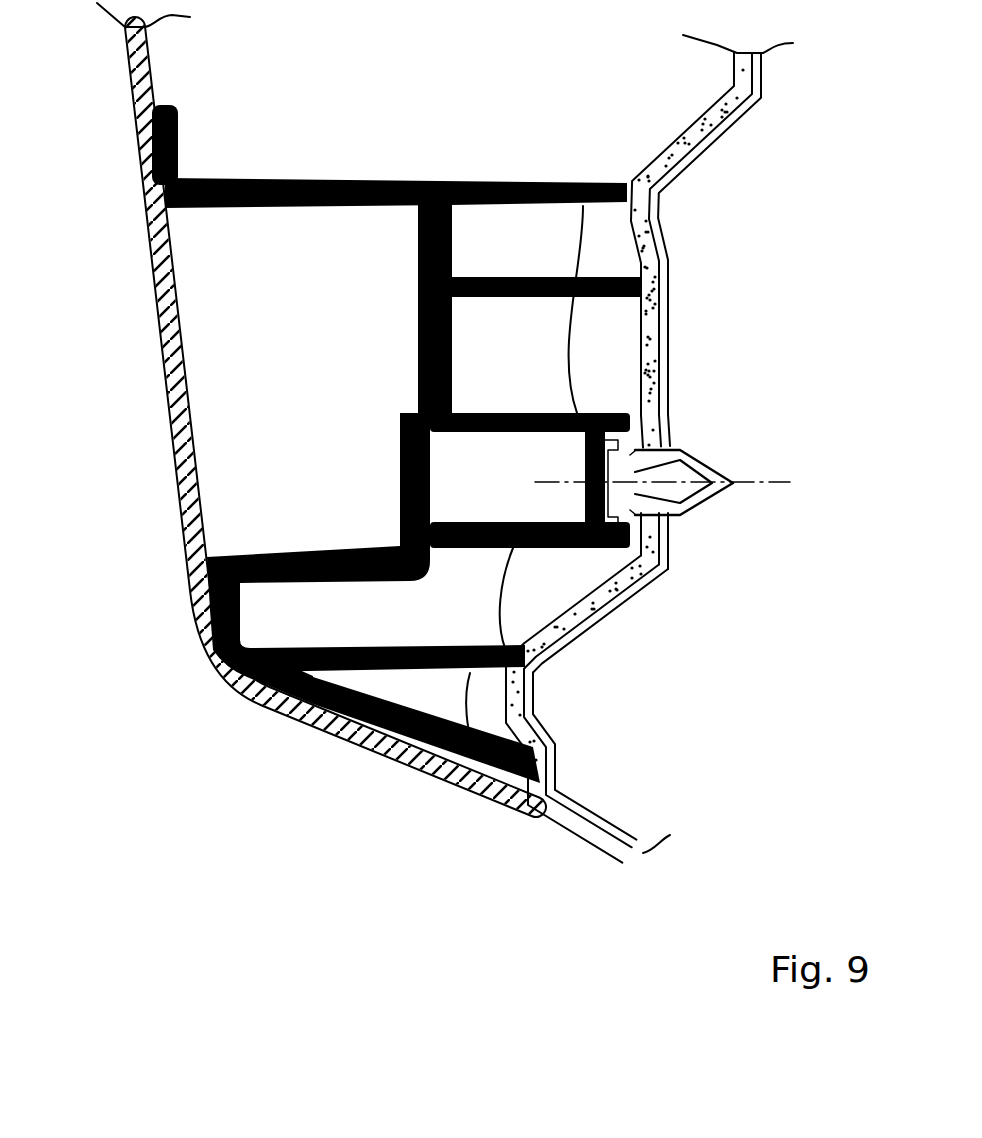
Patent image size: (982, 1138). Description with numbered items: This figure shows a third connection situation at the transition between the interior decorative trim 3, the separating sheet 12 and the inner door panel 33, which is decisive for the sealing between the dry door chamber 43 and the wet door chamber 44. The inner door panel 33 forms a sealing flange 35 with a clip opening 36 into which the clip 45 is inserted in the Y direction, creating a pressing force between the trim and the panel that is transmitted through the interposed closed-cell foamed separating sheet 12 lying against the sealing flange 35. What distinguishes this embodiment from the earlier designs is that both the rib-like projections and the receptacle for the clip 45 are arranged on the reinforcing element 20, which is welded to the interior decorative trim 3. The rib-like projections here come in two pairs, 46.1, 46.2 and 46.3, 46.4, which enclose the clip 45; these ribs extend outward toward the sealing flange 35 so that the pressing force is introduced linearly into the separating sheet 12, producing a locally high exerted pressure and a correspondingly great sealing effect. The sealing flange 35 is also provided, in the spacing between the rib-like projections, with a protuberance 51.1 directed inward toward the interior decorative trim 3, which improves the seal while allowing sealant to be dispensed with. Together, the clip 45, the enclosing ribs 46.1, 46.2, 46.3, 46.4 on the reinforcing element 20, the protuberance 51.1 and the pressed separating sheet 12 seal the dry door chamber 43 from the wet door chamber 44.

The interior decorative trim 3 is at (170, 400).
The separating sheet 12 is at (530, 633).
The reinforcing element 20 is at (357, 183).
The inner door panel 33 is at (650, 603).
The sealing flange 35 is at (660, 366).
The clip openings 36 is at (667, 520).
The dry door chamber 43 is at (522, 92).
The wet door chamber 44 is at (877, 468).
The clip 45 is at (720, 482).
The rib-like projection 46.1 is at (503, 753).
The rib-like projection 46.2 is at (395, 668).
The rib-like projection 46.3 is at (557, 282).
The rib-like projection 46.4 is at (562, 190).
The protuberance 51.1 is at (530, 712).